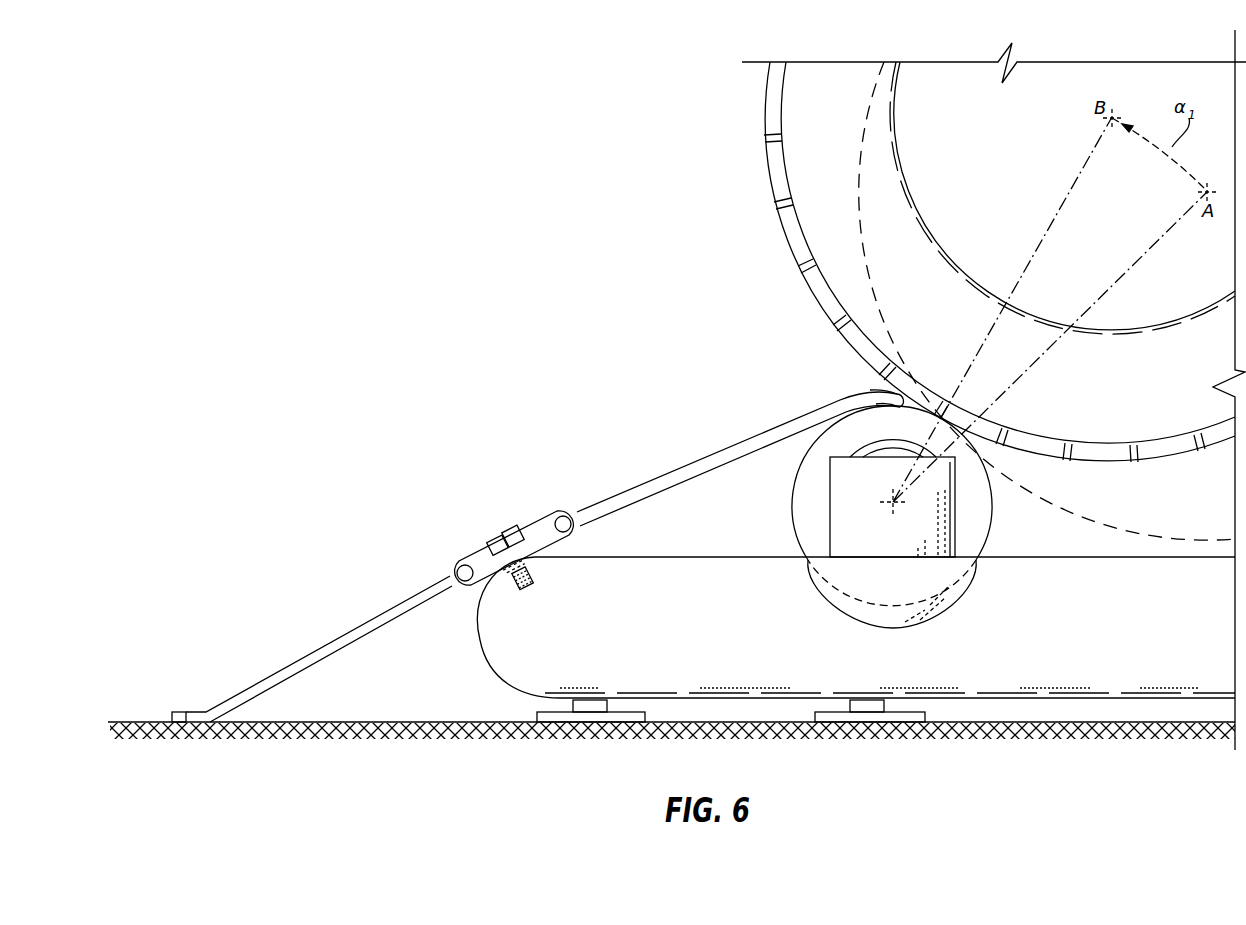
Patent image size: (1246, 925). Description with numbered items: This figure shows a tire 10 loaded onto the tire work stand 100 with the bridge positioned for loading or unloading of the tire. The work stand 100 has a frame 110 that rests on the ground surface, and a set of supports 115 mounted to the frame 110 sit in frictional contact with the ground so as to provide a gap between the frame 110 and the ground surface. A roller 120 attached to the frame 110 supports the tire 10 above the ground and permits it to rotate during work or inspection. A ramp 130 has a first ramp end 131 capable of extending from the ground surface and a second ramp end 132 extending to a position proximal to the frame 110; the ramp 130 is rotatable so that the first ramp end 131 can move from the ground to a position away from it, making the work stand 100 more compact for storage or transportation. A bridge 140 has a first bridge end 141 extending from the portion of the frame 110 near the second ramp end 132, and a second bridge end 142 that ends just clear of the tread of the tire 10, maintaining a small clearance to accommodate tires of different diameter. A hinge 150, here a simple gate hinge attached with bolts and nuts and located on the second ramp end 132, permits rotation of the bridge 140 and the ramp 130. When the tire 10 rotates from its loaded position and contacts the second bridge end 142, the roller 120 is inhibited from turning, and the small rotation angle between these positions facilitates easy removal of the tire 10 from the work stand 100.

The tire 10 is at (767, 158).
The tire work stand 100 is at (376, 240).
The frame 110 is at (1117, 647).
The supports 115 is at (618, 708).
The roller 120 is at (793, 494).
The ramp 130 is at (347, 637).
The first ramp end 131 is at (205, 709).
The second ramp end 132 is at (450, 574).
The bridge 140 is at (720, 452).
The first bridge end 141 is at (587, 510).
The second bridge end 142 is at (861, 397).
The hinge 150 is at (548, 516).